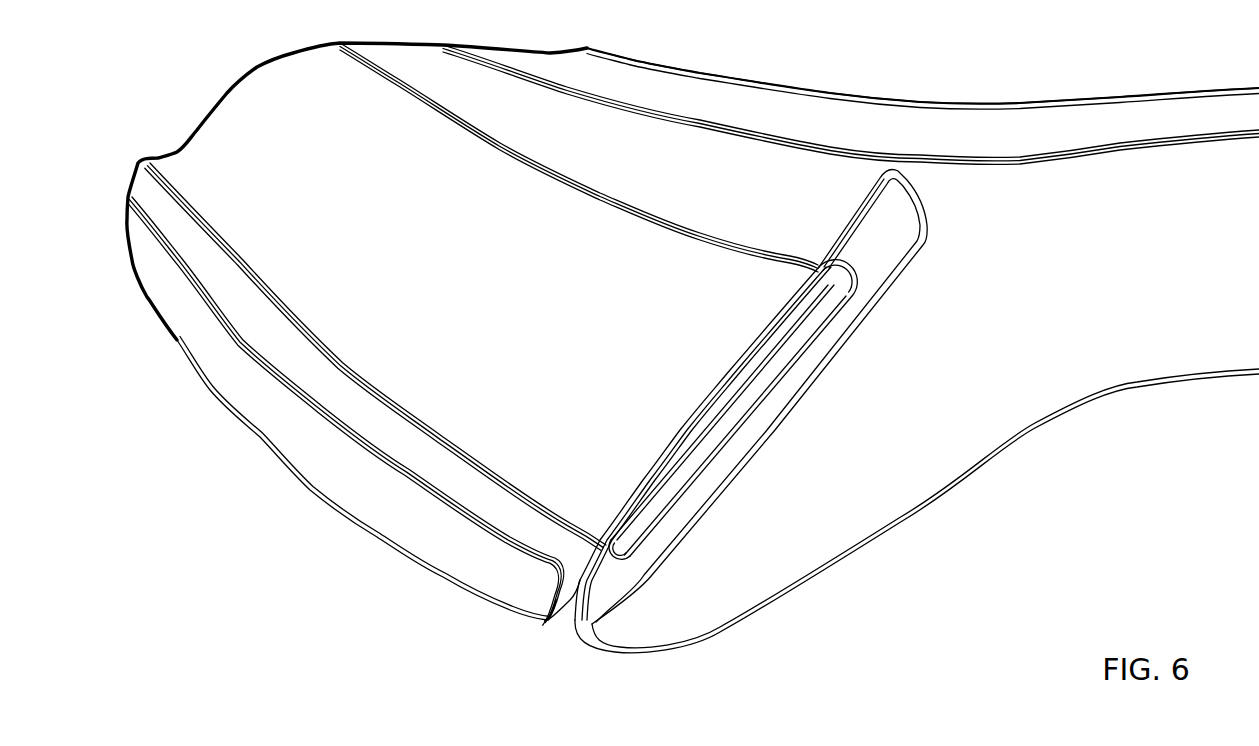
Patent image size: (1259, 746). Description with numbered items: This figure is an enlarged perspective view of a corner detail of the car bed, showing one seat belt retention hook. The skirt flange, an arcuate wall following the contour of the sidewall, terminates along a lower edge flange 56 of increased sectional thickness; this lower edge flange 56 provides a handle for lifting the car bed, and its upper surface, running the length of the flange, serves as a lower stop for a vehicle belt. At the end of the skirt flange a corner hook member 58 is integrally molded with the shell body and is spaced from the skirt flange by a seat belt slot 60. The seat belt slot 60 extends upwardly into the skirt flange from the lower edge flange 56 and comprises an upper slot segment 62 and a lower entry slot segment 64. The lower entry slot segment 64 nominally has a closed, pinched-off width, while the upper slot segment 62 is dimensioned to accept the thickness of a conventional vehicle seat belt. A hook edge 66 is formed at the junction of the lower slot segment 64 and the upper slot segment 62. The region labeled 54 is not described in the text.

The lower strip 54 is at (383, 497).
The lower edge flange 56 is at (355, 402).
The corner hook member 58 is at (867, 472).
The seat belt slot 60 is at (655, 503).
The upper slot segment 62 is at (785, 343).
The lower entry slot segment 64 is at (548, 612).
The hook edge 66 is at (620, 560).